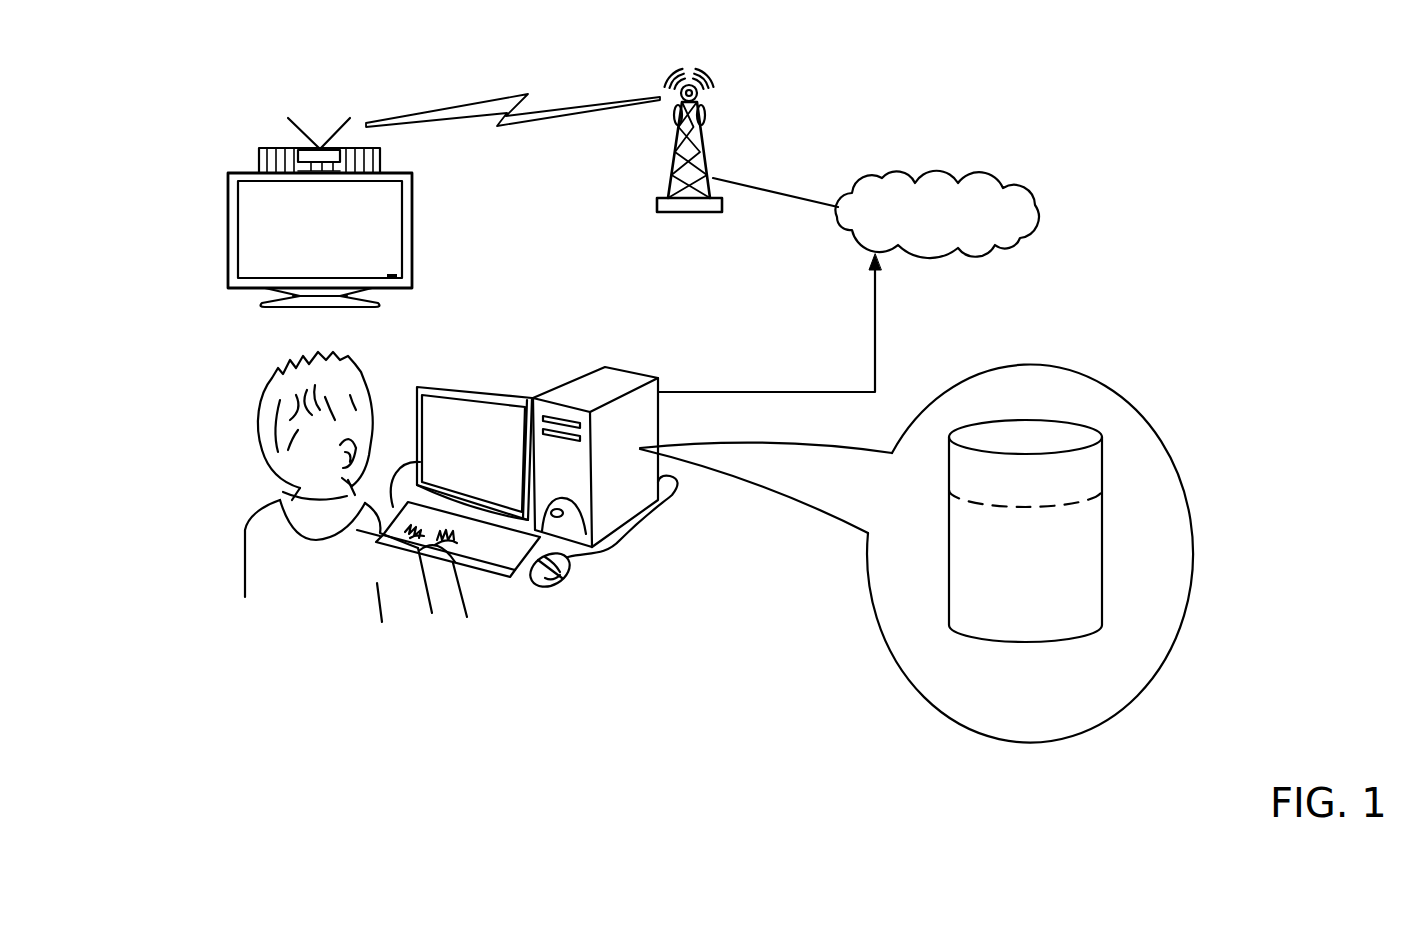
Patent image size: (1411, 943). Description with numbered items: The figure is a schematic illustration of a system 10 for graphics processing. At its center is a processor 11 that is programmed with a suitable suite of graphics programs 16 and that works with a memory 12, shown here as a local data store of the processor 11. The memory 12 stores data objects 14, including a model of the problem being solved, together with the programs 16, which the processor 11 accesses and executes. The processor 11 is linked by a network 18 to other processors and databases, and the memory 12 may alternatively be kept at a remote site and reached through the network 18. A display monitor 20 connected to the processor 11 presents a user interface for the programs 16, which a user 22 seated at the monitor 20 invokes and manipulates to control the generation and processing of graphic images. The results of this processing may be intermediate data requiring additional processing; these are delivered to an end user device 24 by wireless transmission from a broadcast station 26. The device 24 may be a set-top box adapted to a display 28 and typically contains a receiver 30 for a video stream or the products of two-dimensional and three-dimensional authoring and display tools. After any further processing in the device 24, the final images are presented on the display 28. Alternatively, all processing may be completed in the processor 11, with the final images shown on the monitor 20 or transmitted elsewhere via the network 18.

The system 10 is at (1273, 163).
The processor 11 is at (588, 370).
The memory 12 is at (1078, 420).
The data objects 14 is at (1102, 466).
The suite of graphics programs 16 is at (1102, 541).
The network 18 is at (1037, 188).
The display monitor 20 is at (485, 388).
The user 22 is at (258, 430).
The end user device 24 is at (259, 165).
The broadcast station 26 is at (709, 150).
The display 28 is at (412, 228).
The receiver 30 is at (303, 152).